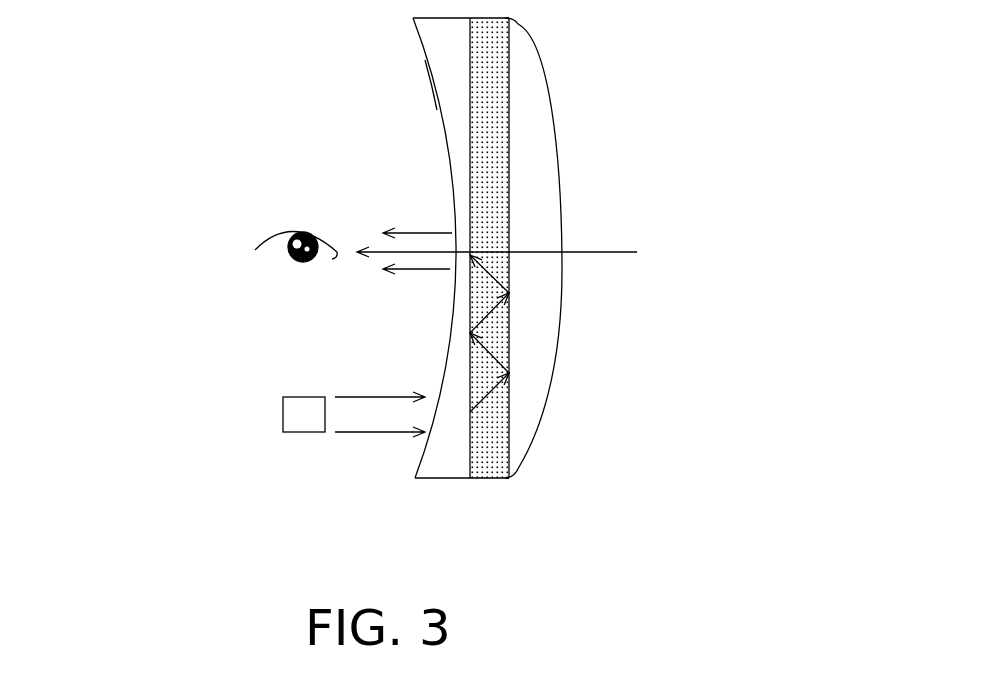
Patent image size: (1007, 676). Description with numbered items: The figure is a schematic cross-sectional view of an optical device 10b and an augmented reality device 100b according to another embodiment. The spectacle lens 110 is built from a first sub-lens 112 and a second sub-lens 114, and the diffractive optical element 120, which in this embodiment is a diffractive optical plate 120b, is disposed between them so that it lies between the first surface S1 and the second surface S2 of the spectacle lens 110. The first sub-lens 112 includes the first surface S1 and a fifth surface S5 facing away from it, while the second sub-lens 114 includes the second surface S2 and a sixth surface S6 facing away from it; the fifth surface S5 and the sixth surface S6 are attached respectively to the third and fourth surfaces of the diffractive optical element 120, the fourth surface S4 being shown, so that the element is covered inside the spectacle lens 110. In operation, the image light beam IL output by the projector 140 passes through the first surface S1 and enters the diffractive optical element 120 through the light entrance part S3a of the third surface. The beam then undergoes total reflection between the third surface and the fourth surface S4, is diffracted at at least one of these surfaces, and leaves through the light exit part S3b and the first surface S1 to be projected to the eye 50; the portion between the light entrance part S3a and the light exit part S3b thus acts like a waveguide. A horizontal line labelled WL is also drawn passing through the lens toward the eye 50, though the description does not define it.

The augmented reality device 100b is at (693, 550).
The optical device 10b is at (106, 22).
The spectacle lens 110 is at (398, 247).
The first sub-lens 112 is at (433, 37).
The second sub-lens 114 is at (592, 125).
The diffractive optical element 120 is at (407, 248).
The diffractive optical plate 120b is at (592, 42).
The projector 140 is at (295, 415).
The eye 50 is at (270, 260).
The image light beam IL is at (423, 232).
The ambient world light WL is at (608, 252).
The first surface S1 is at (419, 78).
The second surface S2 is at (559, 85).
The light entrance part S3a is at (457, 444).
The light exit part S3b is at (456, 261).
The fourth surface S4 is at (513, 450).
The fifth surface S5 is at (477, 120).
The sixth surface S6 is at (503, 194).